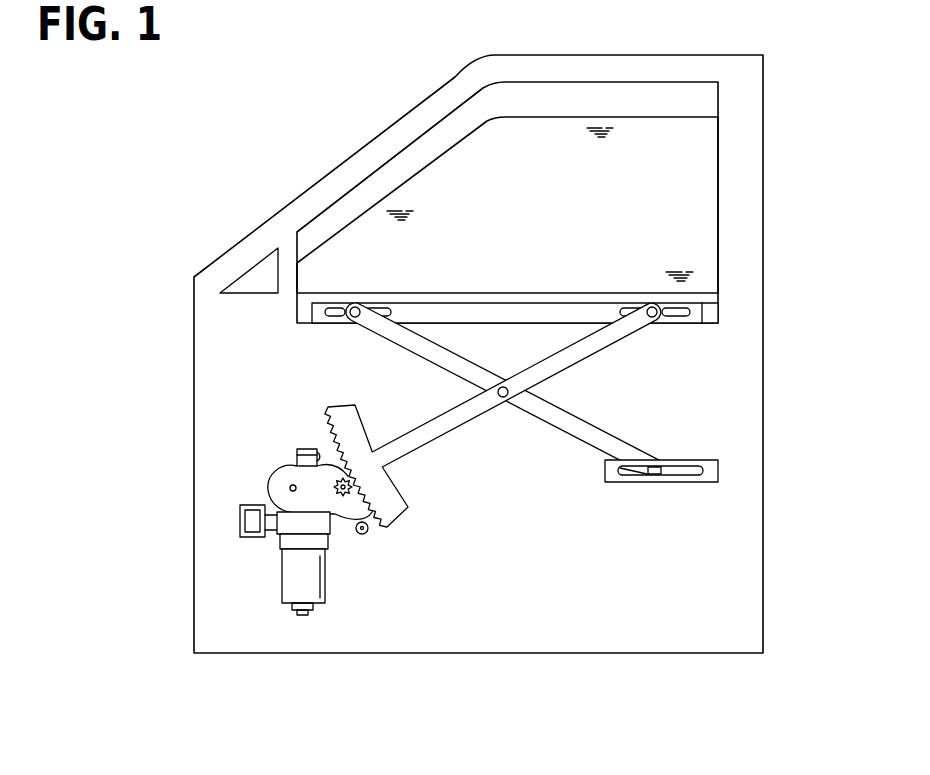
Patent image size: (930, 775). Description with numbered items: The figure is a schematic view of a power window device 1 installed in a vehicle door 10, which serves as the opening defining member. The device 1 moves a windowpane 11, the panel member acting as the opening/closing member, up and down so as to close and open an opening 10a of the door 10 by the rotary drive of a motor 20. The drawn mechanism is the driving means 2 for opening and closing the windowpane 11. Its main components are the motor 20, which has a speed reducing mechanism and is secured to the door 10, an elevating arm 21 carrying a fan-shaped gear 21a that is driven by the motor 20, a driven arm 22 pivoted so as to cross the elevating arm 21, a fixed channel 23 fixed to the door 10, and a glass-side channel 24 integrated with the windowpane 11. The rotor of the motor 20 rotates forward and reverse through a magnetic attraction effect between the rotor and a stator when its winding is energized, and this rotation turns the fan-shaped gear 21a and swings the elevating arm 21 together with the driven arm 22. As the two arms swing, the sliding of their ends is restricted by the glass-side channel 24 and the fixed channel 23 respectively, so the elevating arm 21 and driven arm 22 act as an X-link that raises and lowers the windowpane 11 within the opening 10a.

The power window device 1 is at (265, 158).
The driving means 2 is at (253, 433).
The door 10 is at (740, 387).
The opening 10a is at (660, 83).
The windowpane 11 is at (530, 130).
The motor 20 is at (290, 585).
The elevating arm 21 is at (598, 348).
The fan-shaped gear 21a is at (397, 510).
The driven arm 22 is at (552, 418).
The fixed channel 23 is at (680, 481).
The glass-side channel 24 is at (718, 305).